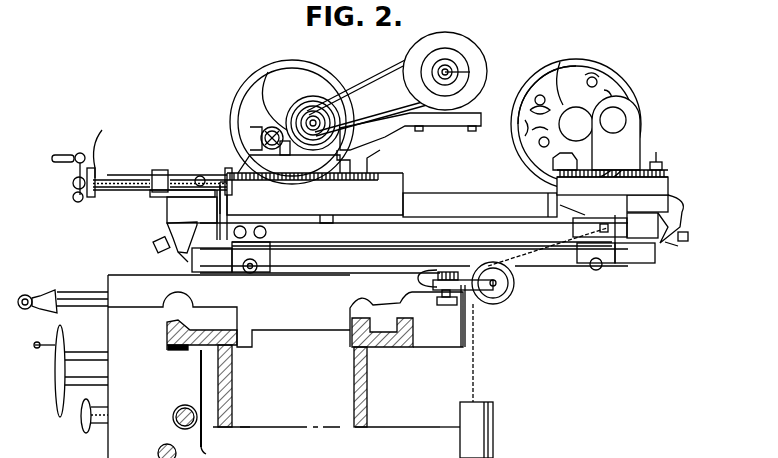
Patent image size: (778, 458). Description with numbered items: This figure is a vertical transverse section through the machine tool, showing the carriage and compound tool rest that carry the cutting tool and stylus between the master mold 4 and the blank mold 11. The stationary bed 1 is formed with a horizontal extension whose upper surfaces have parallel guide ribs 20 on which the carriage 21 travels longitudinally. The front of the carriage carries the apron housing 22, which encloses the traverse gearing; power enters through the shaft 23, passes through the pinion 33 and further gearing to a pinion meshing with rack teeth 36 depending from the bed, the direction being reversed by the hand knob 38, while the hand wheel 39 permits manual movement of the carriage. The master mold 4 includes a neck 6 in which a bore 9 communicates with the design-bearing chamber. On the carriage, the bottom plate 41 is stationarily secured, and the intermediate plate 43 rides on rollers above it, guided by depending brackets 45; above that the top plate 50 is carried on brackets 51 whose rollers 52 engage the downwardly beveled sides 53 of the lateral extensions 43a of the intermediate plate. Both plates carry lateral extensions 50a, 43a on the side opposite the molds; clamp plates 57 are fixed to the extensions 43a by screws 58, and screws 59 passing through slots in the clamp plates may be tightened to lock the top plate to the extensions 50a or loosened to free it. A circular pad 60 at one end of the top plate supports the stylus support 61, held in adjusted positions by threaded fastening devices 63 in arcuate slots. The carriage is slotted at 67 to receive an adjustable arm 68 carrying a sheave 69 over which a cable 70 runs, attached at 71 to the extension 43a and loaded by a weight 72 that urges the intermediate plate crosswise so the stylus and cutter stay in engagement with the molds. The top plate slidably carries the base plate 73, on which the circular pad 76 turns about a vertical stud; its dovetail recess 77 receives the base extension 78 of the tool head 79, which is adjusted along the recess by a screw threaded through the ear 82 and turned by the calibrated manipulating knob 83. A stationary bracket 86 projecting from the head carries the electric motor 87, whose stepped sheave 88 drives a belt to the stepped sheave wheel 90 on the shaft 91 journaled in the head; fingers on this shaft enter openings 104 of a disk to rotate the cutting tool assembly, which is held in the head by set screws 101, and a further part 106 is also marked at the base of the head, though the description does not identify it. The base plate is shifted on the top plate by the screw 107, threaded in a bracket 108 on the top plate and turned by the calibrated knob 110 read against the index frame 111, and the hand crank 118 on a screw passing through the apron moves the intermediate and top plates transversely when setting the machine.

The stationary bed construction 1 is at (370, 384).
The master mold 4 is at (603, 71).
The neck 6 is at (601, 88).
The bore 9 is at (561, 67).
The blank mold 11 is at (249, 91).
The guide ribs 20 is at (355, 328).
The carriage 21 is at (307, 322).
The housing 22 is at (231, 404).
The shaft 23 is at (160, 453).
The pinion 33 is at (414, 257).
The rack teeth 36 is at (177, 350).
The hand knob 38 is at (79, 428).
The hand wheel 39 is at (56, 390).
The bottom plate 41 is at (312, 264).
The intermediate plate 43 is at (405, 231).
The lateral extensions 43a is at (172, 215).
The brackets 45 is at (267, 232).
The top plate 50 is at (455, 203).
The lateral extensions 50a is at (225, 193).
The brackets 51 is at (168, 222).
The rollers 52 is at (155, 246).
The downwardly beveled sides 53 is at (182, 253).
The clamp plates 57 is at (620, 210).
The screws 58 is at (258, 248).
The screws 59 is at (228, 212).
The circular pad 60 is at (557, 184).
The stylus support 61 is at (644, 147).
The threaded fastening devices 63 is at (552, 163).
The slot 67 is at (440, 303).
The adjustable arm 68 is at (444, 271).
The sheave 69 is at (512, 295).
The cable 70 is at (530, 250).
The connection 71 is at (587, 216).
The weight 72 is at (494, 425).
The base plate 73 is at (358, 206).
The circular pad 76 is at (384, 174).
The dovetail recess 77 is at (243, 160).
The base extension 78 is at (362, 160).
The tool head 79 is at (268, 73).
The ear 82 is at (260, 138).
The calibrated manipulating knob 83 is at (262, 128).
The stationary bracket 86 is at (418, 130).
The electric motor 87 is at (470, 50).
The stepped sheave 88 is at (458, 73).
The stepped sheave wheel 90 is at (313, 111).
The shaft 91 is at (379, 91).
The set screws 101 is at (255, 442).
The openings 104 is at (439, 442).
The base 106 is at (403, 442).
The screw 107 is at (125, 175).
The bracket 108 is at (161, 169).
The calibrated knob 110 is at (76, 153).
The index frame 111 is at (97, 158).
The hand crank 118 is at (29, 296).